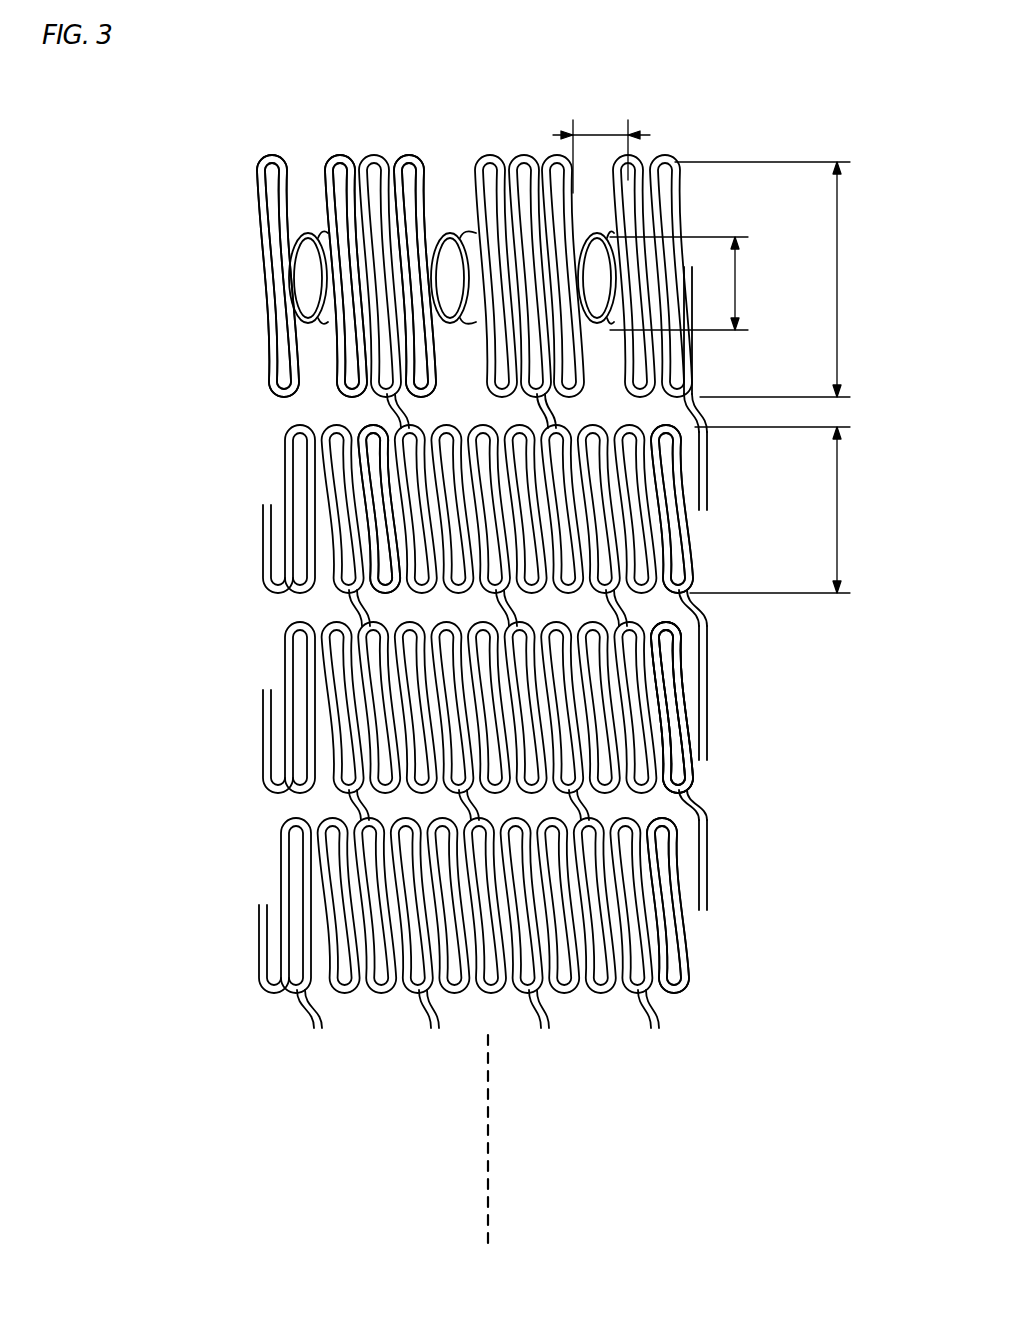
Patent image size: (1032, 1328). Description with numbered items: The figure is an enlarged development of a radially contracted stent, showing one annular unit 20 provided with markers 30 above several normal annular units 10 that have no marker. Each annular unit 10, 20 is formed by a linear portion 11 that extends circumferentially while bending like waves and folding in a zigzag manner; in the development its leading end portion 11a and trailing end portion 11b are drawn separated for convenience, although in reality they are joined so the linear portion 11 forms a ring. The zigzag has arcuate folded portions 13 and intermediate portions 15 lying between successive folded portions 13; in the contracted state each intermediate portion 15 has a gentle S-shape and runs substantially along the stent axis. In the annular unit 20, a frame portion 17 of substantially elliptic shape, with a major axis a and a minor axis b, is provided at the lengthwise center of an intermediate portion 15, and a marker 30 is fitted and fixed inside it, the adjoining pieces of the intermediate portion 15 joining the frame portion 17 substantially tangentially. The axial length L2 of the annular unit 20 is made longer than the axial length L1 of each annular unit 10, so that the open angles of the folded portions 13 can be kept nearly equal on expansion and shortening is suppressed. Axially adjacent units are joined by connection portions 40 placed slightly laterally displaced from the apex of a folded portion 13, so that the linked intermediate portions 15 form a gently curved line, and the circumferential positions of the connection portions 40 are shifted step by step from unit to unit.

The annular unit 10 is at (190, 425).
The linear portion 11 is at (262, 148).
The leading end portion 11a is at (255, 270).
The trailing end portion 11b is at (692, 268).
The folded portion 13 is at (337, 158).
The intermediate portion 15 is at (437, 165).
The frame portion 17 is at (300, 232).
The annular unit 20 is at (190, 155).
The marker 30 is at (300, 272).
The connection portion 40 is at (418, 408).
The major axis a is at (679, 283).
The minor axis b is at (601, 148).
The axial length L1 is at (770, 510).
The axial length L2 is at (762, 279).